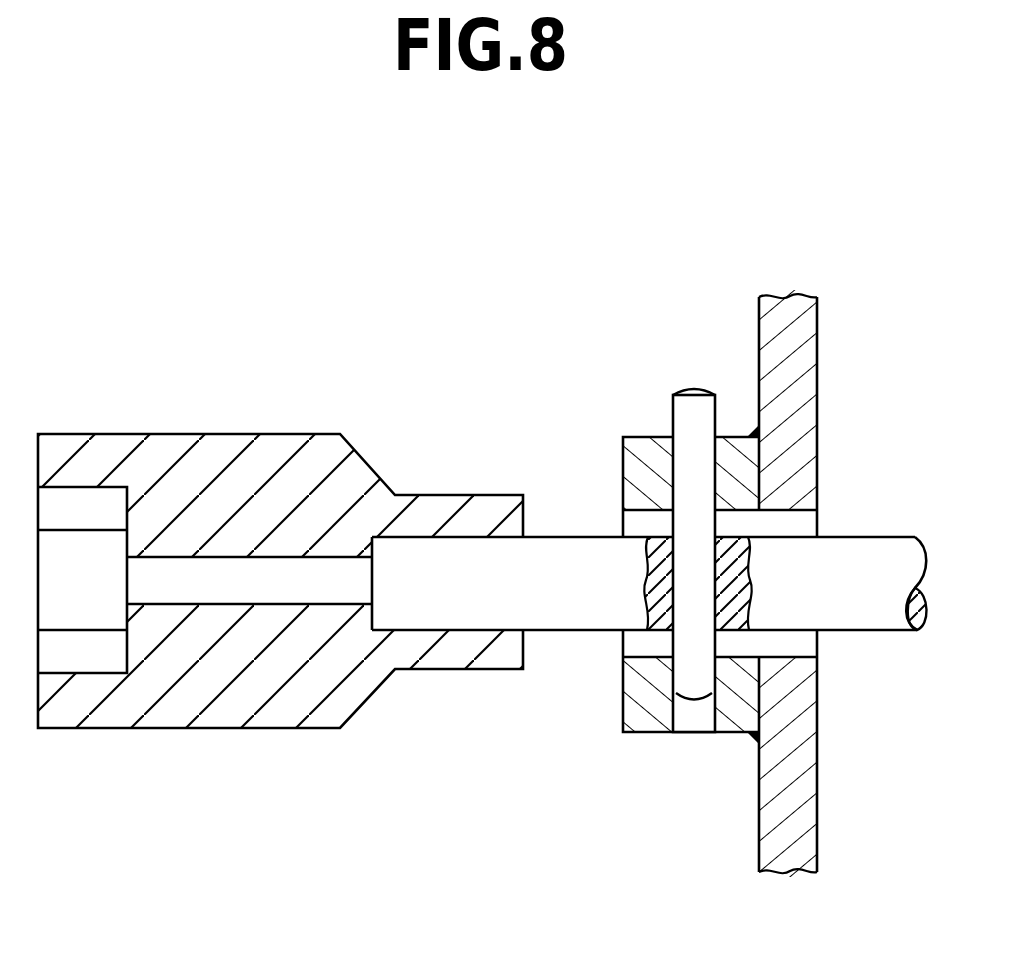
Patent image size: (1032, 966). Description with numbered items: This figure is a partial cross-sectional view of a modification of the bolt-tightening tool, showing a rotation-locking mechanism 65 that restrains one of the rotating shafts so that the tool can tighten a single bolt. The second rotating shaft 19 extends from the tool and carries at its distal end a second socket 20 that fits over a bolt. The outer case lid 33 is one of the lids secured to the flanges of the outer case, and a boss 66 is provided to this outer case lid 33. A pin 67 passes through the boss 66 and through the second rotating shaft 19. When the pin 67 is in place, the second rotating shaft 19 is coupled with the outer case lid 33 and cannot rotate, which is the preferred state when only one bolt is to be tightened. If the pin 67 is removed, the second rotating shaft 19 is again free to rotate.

The second rotating shaft 19 is at (561, 535).
The second socket 20 is at (218, 729).
The outer case lid 33 is at (758, 797).
The rotation-locking mechanism 65 is at (665, 324).
The boss 66 is at (623, 482).
The pin 67 is at (693, 387).